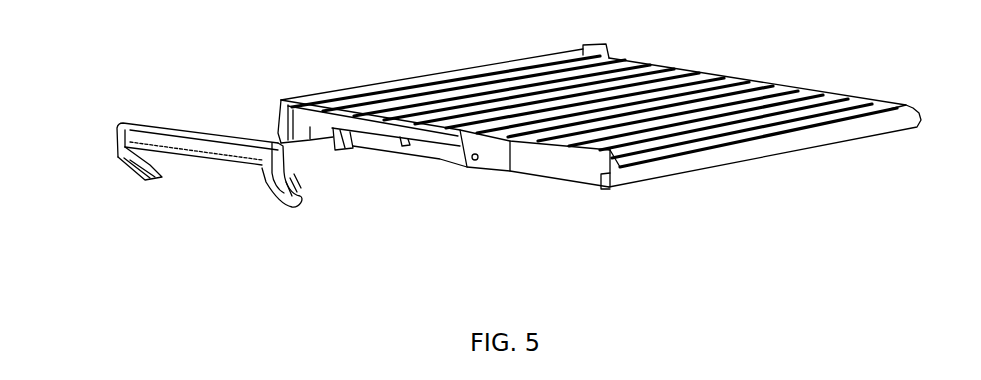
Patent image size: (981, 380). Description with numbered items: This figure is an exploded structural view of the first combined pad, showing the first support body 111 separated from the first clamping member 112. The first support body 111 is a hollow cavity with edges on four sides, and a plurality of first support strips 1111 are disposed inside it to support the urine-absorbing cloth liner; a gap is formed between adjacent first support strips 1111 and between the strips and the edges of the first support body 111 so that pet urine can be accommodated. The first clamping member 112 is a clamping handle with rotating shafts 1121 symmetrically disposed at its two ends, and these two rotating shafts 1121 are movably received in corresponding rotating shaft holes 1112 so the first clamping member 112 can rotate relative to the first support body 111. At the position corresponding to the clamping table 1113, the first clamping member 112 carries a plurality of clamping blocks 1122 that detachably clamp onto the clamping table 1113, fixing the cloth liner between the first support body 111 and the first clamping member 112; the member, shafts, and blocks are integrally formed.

The first support body 111 is at (599, 128).
The first support strips 1111 is at (633, 56).
The rotating shaft holes 1112 is at (477, 160).
The clamping table 1113 is at (423, 153).
The first clamping member 112 is at (163, 167).
The rotating shafts 1121 is at (157, 180).
The clamping blocks 1122 is at (197, 160).